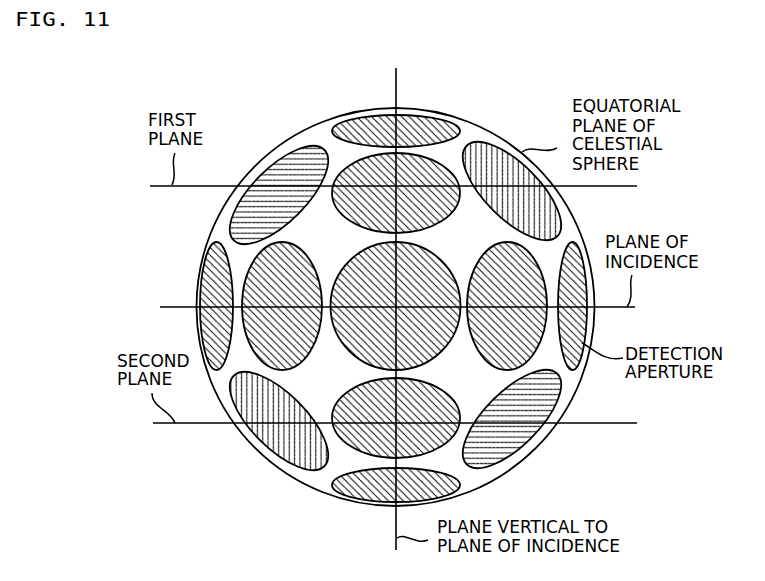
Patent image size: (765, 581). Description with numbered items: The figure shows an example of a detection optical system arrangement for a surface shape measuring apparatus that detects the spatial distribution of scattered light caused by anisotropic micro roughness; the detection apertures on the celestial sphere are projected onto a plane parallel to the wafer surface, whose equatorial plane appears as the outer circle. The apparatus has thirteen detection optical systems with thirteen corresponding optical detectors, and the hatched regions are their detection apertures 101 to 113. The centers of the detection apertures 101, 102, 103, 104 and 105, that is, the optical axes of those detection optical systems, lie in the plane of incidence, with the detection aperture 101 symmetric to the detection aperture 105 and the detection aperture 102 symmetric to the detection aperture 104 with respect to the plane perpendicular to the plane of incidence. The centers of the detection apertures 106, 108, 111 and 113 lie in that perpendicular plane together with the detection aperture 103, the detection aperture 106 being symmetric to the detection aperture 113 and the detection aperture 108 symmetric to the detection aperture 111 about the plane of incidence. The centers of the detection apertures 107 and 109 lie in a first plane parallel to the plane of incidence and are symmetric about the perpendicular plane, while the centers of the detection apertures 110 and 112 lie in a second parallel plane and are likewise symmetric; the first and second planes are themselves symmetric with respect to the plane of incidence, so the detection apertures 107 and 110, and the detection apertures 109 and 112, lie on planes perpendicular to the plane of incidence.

The detection aperture 101 is at (209, 306).
The detection aperture 102 is at (282, 306).
The detection aperture 103 is at (396, 306).
The detection aperture 104 is at (507, 306).
The detection aperture 105 is at (579, 306).
The detection aperture 106 is at (396, 131).
The detection aperture 107 is at (279, 195).
The detection aperture 108 is at (396, 193).
The detection aperture 109 is at (512, 191).
The detection aperture 110 is at (279, 421).
The detection aperture 111 is at (396, 418).
The detection aperture 112 is at (512, 419).
The detection aperture 113 is at (396, 485).